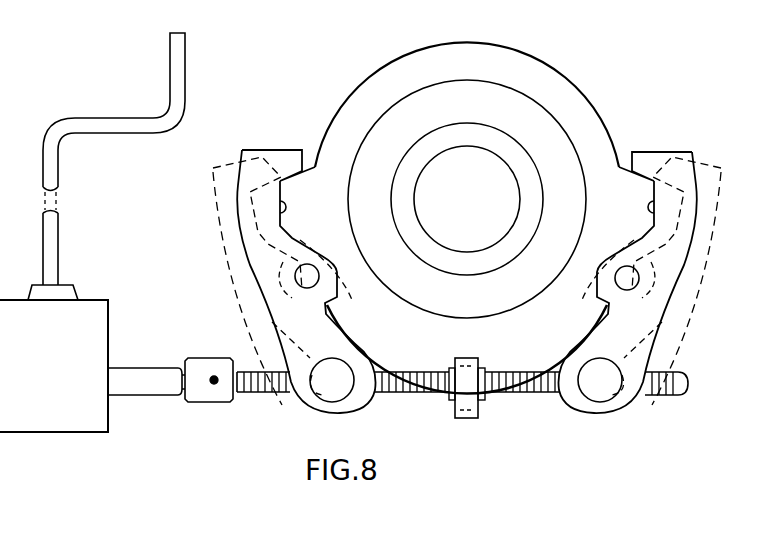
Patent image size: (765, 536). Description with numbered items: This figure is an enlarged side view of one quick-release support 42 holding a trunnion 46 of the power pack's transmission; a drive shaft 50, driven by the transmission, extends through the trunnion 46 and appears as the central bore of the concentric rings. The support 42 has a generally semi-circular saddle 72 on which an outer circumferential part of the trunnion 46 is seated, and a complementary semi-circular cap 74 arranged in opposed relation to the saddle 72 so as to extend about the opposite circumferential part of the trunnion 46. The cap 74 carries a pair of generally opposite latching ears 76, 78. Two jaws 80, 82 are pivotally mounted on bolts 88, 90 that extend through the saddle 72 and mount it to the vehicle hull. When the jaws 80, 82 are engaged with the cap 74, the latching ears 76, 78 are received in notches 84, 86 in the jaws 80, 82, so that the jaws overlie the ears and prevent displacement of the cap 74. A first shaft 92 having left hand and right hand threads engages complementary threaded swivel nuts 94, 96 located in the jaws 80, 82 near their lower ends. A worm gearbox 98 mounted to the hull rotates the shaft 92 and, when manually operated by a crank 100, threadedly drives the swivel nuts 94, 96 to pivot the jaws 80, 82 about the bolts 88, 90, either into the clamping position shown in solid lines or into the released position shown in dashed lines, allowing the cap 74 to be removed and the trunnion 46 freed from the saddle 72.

The quick-release support 42 is at (586, 82).
The trunnion 46 is at (408, 117).
The drive shaft 50 is at (484, 217).
The saddle 72 is at (453, 338).
The cap 74 is at (336, 114).
The latching ear 76 is at (308, 187).
The latching ear 78 is at (626, 187).
The jaw 80 is at (254, 286).
The jaw 82 is at (680, 294).
The notch 84 is at (350, 201).
The notch 86 is at (590, 202).
The bolt 88 is at (316, 300).
The bolt 90 is at (628, 290).
The first shaft 92 is at (689, 386).
The swivel nut 94 is at (318, 388).
The swivel nut 96 is at (596, 400).
The worm gearbox 98 is at (62, 377).
The crank 100 is at (58, 266).